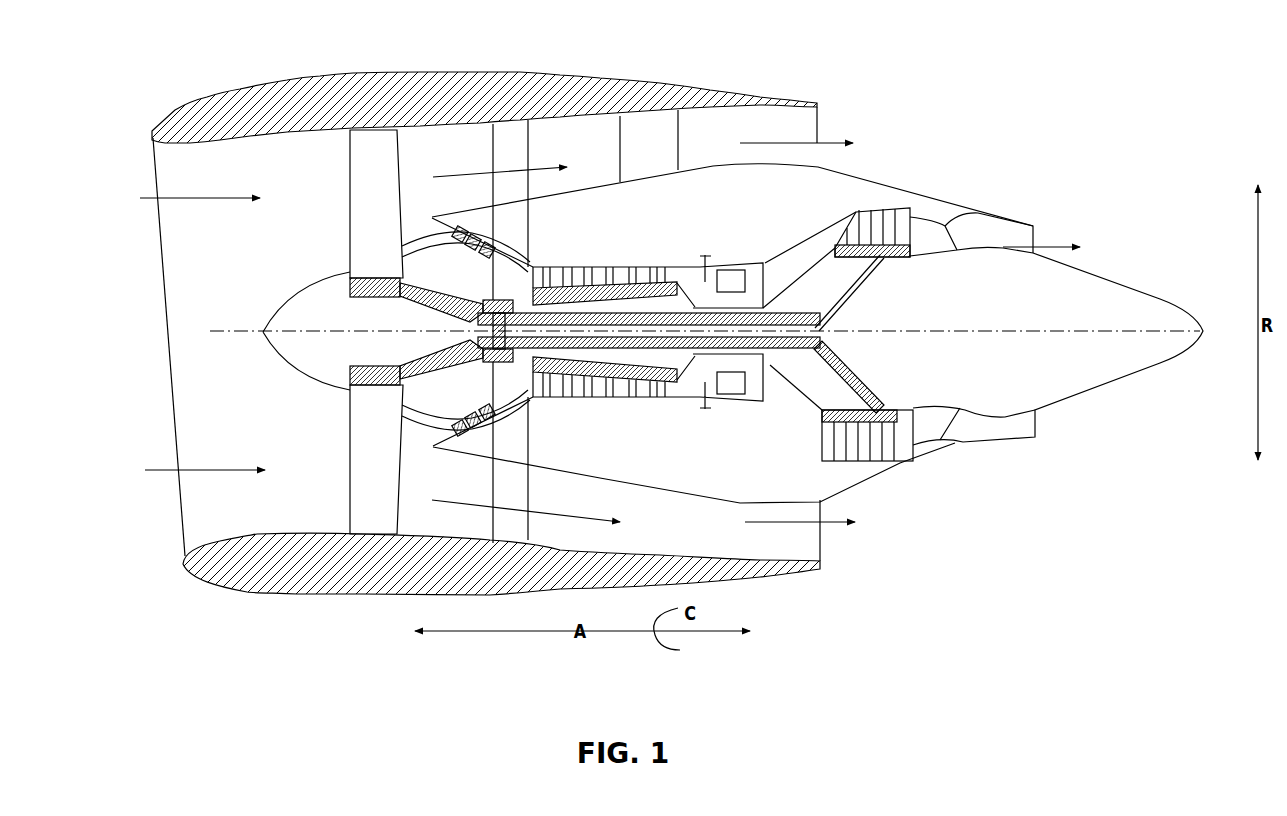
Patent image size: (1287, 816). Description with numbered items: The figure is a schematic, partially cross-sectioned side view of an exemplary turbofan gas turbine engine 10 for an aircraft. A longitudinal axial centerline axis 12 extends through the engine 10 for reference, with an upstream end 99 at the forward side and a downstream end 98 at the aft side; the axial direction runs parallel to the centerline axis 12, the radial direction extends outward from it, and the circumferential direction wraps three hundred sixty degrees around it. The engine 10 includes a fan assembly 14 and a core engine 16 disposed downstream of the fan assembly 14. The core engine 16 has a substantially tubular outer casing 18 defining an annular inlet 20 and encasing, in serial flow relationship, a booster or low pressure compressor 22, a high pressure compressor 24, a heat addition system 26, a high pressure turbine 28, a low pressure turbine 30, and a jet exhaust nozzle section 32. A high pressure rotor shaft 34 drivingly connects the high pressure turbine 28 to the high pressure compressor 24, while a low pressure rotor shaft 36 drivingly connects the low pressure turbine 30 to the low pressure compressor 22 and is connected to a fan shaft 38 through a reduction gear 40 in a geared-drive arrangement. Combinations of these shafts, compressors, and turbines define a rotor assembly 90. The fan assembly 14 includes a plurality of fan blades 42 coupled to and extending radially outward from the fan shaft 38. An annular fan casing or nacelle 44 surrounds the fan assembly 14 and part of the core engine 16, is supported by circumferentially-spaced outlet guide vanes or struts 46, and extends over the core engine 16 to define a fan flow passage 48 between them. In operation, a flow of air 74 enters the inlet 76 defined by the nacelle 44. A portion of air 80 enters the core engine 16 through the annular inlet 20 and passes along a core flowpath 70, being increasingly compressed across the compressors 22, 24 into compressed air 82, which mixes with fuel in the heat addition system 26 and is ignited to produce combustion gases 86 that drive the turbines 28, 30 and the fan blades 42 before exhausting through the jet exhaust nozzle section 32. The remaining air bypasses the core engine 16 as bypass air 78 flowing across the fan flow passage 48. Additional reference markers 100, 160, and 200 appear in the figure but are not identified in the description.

The gas turbine engine 10 is at (955, 68).
The axial centerline axis 12 is at (988, 328).
The fan assembly 14 is at (423, 140).
The core engine 16 is at (712, 163).
The outer casing 18 is at (673, 493).
The annular inlet 20 is at (430, 437).
The low pressure compressor 22 is at (483, 403).
The high pressure compressor 24 is at (557, 400).
The heat addition system 26 is at (718, 415).
The high pressure turbine 28 is at (778, 393).
The low pressure turbine 30 is at (900, 466).
The jet exhaust nozzle section 32 is at (961, 445).
The high pressure rotor shaft 34 is at (780, 297).
The low pressure rotor shaft 36 is at (858, 285).
The fan shaft 38 is at (398, 300).
The reduction gear 40 is at (483, 300).
The fan blades 42 is at (367, 165).
The nacelle 44 is at (353, 72).
The outlet guide vanes 46 is at (517, 145).
The fan flow passage 48 is at (642, 528).
The core flowpath 70 is at (633, 276).
The flow of air 74 is at (185, 198).
The inlet 76 is at (237, 497).
The bypass air 78 is at (480, 167).
The core air 80 is at (433, 217).
The compressed air 82 is at (545, 265).
The combustion gases 86 is at (1043, 245).
The rotor assembly 90 is at (610, 268).
The downstream end 98 is at (1203, 325).
The upstream end 99 is at (133, 336).
The core airflow 100 is at (476, 268).
The fan hub 160 is at (430, 362).
The fan duct panel 200 is at (641, 138).